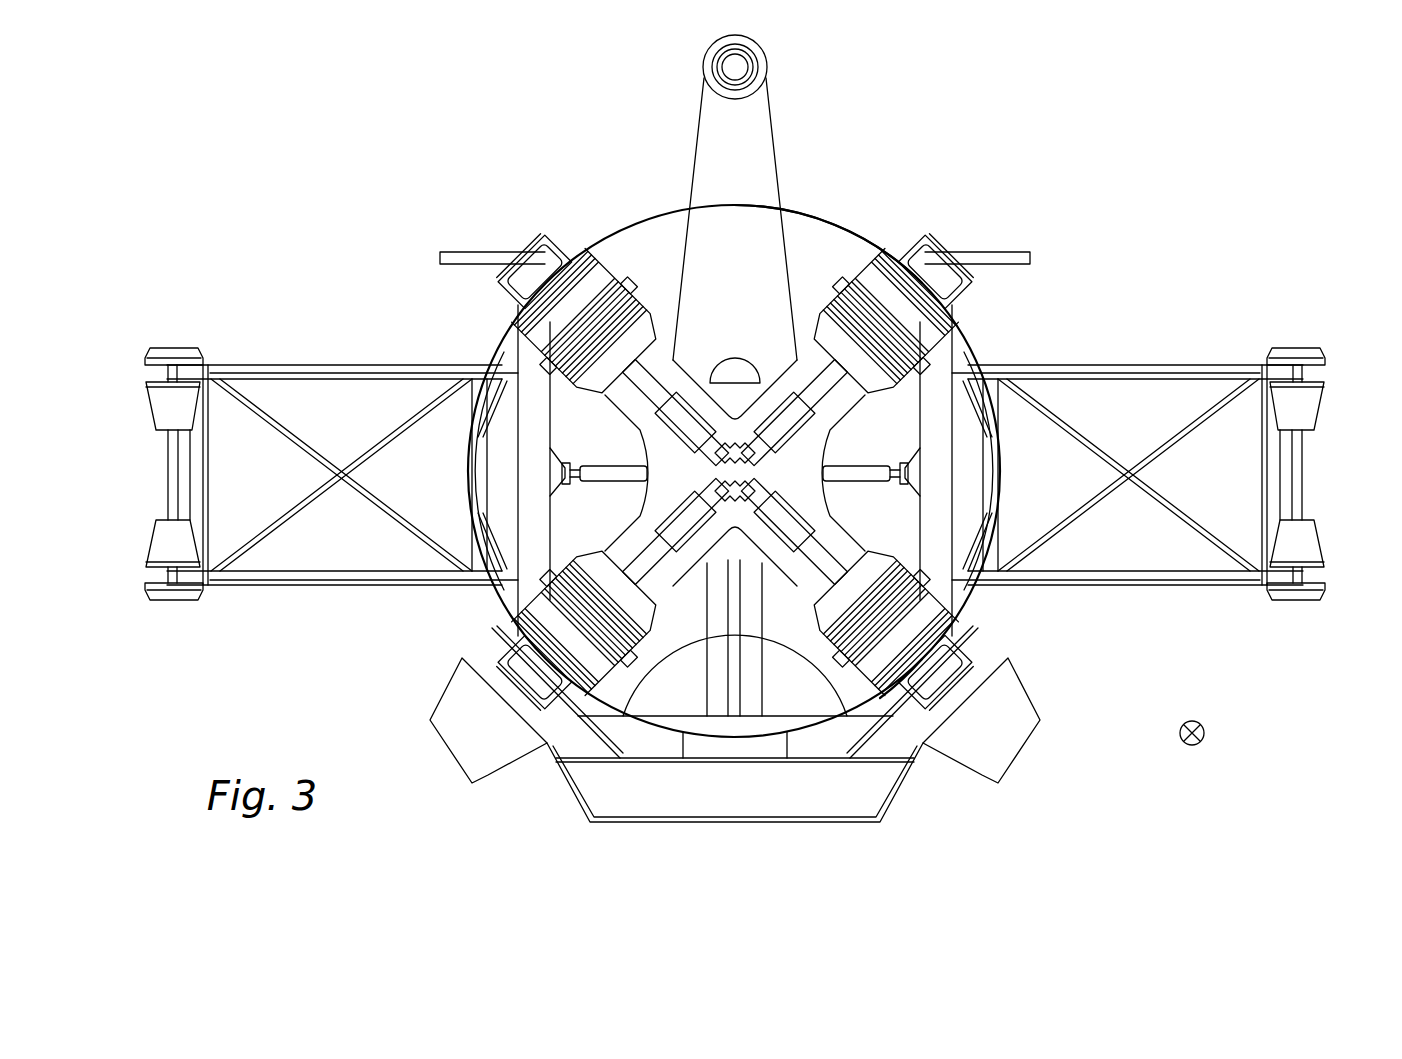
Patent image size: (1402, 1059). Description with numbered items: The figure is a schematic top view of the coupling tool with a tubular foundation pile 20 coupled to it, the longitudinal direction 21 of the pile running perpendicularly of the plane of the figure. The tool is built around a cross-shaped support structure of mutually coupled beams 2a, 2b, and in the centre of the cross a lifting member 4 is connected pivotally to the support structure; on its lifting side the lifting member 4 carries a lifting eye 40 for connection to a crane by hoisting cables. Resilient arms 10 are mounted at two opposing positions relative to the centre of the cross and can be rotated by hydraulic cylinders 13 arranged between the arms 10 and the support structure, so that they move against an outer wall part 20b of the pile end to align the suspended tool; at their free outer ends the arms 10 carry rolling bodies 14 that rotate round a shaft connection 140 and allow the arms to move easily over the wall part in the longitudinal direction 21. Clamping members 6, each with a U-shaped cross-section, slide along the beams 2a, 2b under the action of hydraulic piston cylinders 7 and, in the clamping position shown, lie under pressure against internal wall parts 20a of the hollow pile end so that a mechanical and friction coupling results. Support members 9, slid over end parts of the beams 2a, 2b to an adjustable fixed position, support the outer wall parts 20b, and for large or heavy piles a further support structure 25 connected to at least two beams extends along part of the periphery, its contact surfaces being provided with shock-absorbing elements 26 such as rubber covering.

The beam 2a is at (852, 525).
The beam 2b is at (620, 525).
The lifting member 4 is at (718, 137).
The clamping member 6 is at (638, 300).
The hydraulic piston cylinder 7 is at (702, 442).
The support member 9 is at (456, 697).
The resilient arm 10 is at (296, 334).
The hydraulic cylinder 13 is at (605, 470).
The rolling body 14 is at (165, 405).
The foundation pile 20 is at (627, 215).
The internal wall part 20a is at (878, 238).
The outer wall part 20b is at (978, 607).
The longitudinal direction 21 is at (1192, 721).
The support structure 25 is at (641, 790).
The shock-absorbing element 26 is at (505, 633).
The lifting eye 40 is at (735, 67).
The shaft connection 140 is at (168, 372).